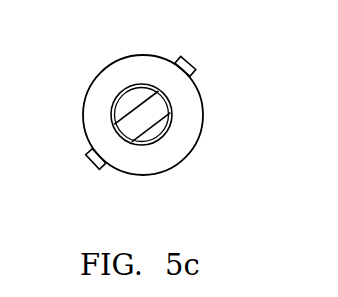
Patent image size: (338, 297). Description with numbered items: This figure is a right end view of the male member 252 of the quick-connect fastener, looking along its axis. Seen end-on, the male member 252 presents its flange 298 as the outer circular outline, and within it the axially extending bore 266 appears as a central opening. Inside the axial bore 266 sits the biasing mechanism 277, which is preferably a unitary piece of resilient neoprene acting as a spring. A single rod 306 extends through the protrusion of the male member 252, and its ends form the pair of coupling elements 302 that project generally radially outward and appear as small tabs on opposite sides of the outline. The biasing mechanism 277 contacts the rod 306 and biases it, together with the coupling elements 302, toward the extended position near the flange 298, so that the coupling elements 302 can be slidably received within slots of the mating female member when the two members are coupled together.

The male member 252 is at (90, 75).
The axially extending bore 266 is at (128, 90).
The biasing mechanism 277 is at (124, 104).
The flange 298 is at (187, 114).
The coupling elements 302 is at (196, 62).
The rod 306 is at (143, 117).